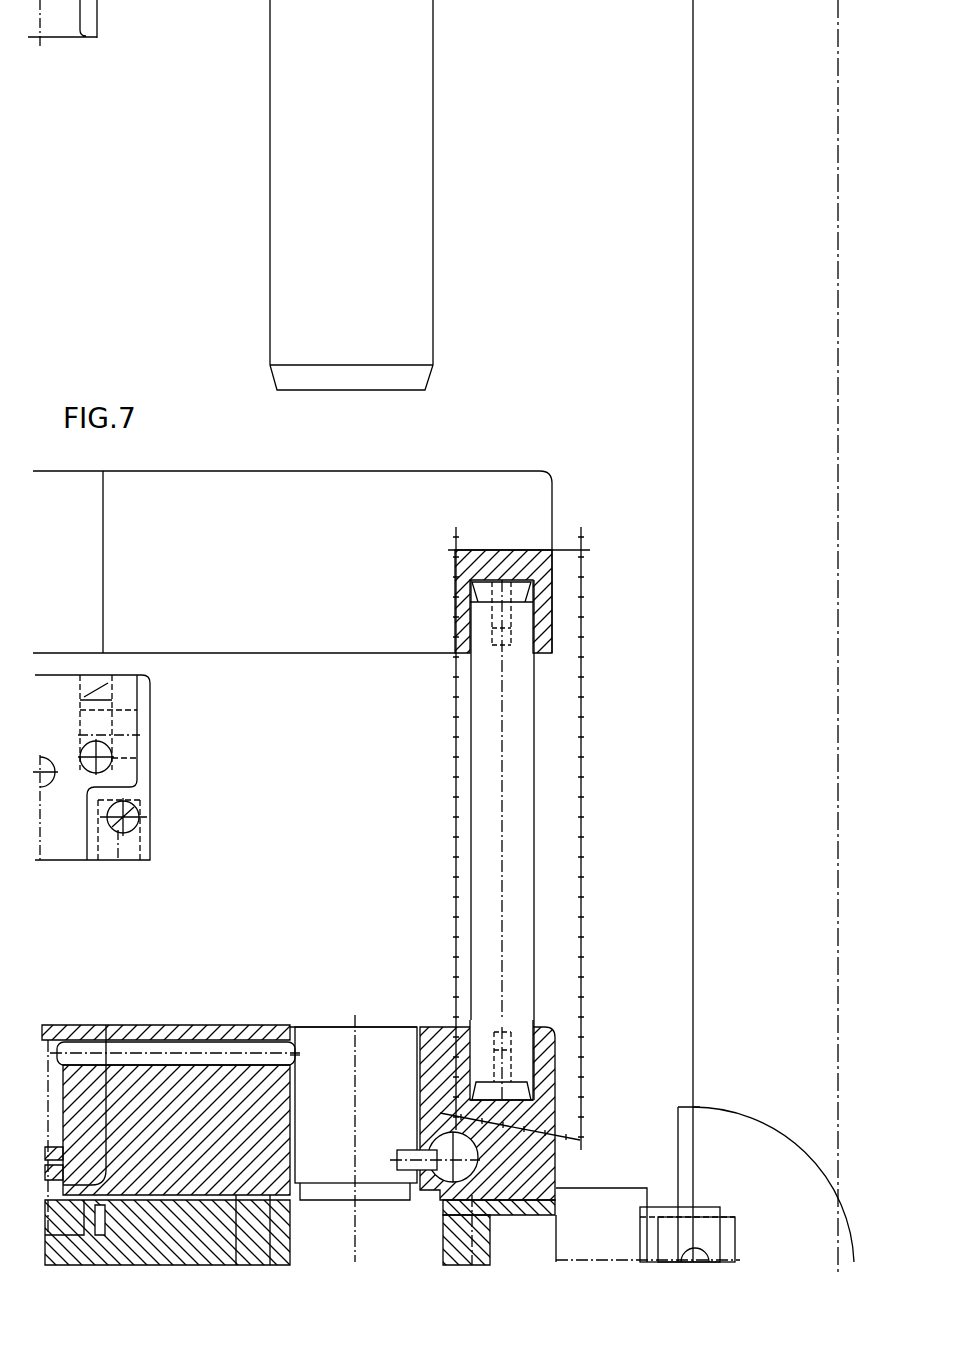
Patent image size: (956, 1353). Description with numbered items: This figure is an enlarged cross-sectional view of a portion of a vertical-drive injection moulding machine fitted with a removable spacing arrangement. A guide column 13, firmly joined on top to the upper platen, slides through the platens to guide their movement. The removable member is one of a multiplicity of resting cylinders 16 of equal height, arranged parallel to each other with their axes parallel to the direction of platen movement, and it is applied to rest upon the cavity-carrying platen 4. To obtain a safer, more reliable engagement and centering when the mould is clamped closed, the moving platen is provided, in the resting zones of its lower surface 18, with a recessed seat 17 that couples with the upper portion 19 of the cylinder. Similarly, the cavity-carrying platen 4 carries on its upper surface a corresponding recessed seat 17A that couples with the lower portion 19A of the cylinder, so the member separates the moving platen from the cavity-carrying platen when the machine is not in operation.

The cavity-carrying platen 4 is at (535, 1165).
The guide column 13 is at (388, 235).
The resting cylinder 16 is at (517, 796).
The recessed seat 17 is at (533, 590).
The recessed seat 17A is at (540, 1097).
The lower surface 18 is at (212, 653).
The upper portion 19 is at (513, 632).
The lower portion 19A is at (555, 1057).